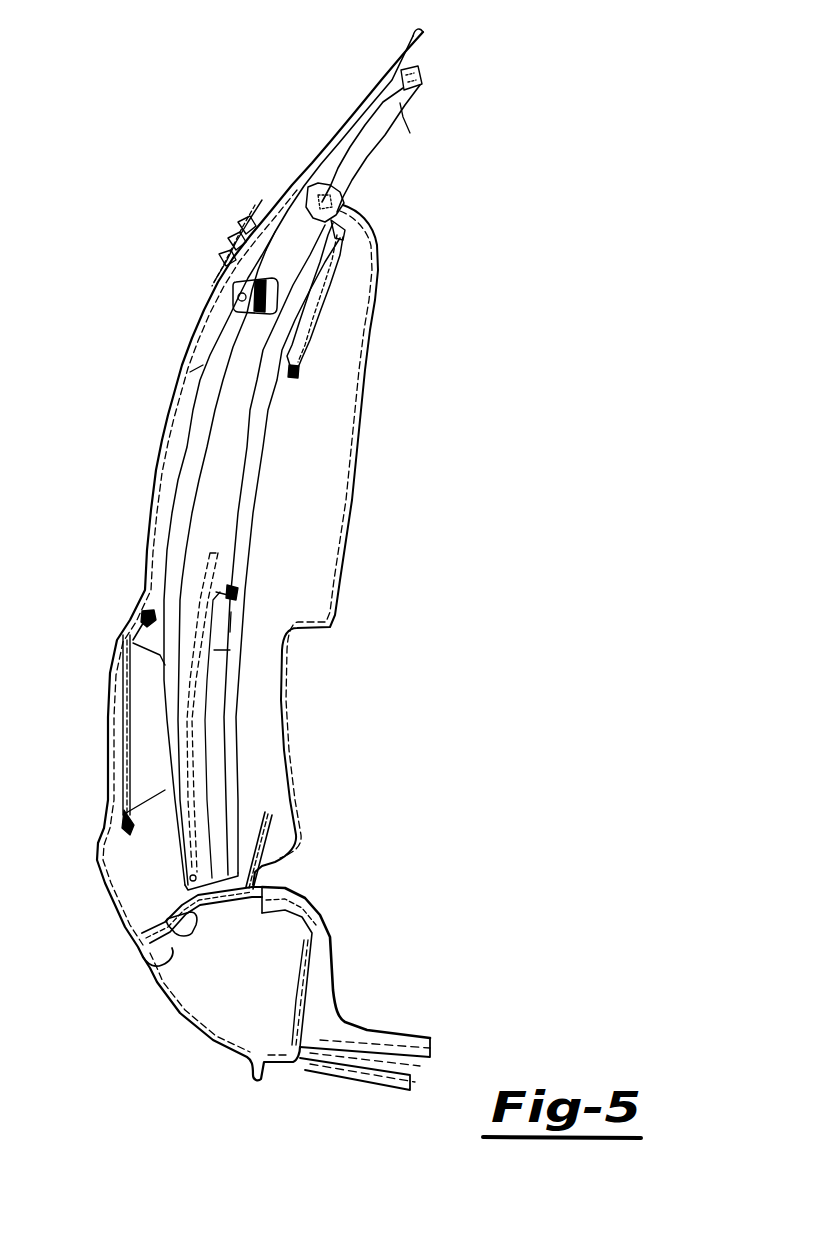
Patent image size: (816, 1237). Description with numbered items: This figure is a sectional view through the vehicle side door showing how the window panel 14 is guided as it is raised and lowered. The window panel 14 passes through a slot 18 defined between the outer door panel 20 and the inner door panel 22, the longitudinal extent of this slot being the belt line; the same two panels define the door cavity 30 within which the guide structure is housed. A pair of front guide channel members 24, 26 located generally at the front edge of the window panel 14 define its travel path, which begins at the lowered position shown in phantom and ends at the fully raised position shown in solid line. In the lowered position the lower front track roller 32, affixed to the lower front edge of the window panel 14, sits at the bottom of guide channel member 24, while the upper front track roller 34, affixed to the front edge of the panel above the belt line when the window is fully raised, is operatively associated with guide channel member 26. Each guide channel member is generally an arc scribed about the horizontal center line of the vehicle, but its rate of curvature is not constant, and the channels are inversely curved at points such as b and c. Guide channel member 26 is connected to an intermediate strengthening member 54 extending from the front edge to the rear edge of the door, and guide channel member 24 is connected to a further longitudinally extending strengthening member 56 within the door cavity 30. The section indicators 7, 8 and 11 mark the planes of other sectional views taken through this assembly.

The section line 8- 8 is at (380, 53).
The window panel 14 is at (352, 110).
The upper front track roller 34 is at (420, 80).
The slot 18 is at (320, 195).
The section line 11- 11 is at (310, 183).
The inverse curvature point c is at (400, 103).
The section line 7- 7 is at (168, 313).
The intermediate strengthening member 54 is at (343, 297).
The lower front track roller 32 is at (240, 300).
The inverse curvature point b is at (193, 371).
The outer door panel 20 is at (163, 407).
The front guide channel member 24 is at (185, 452).
The front guide channel member 26 is at (237, 477).
The inner door panel 22 is at (350, 476).
The door cavity 30 is at (292, 572).
The longitudinally extending strengthening member 56 is at (137, 655).